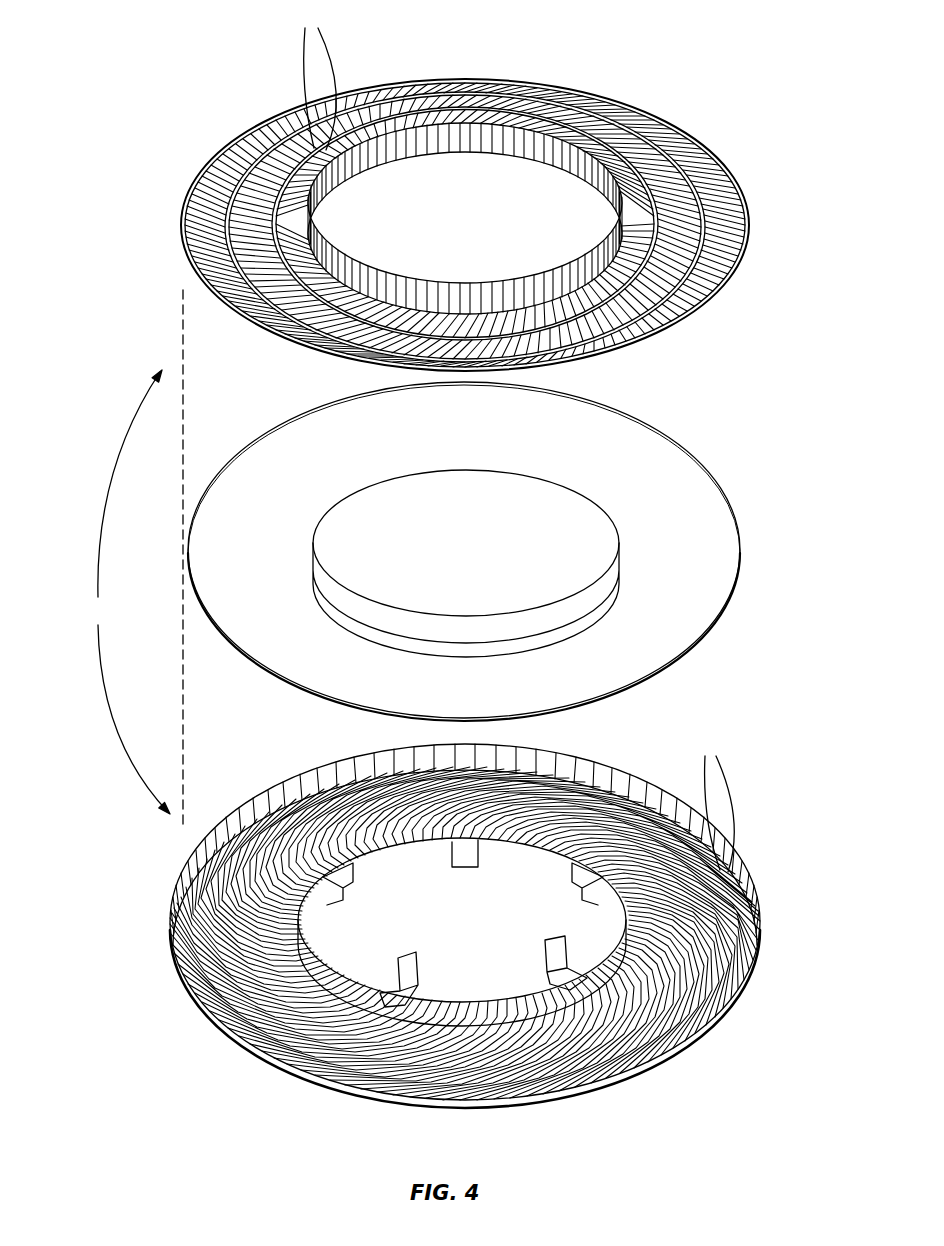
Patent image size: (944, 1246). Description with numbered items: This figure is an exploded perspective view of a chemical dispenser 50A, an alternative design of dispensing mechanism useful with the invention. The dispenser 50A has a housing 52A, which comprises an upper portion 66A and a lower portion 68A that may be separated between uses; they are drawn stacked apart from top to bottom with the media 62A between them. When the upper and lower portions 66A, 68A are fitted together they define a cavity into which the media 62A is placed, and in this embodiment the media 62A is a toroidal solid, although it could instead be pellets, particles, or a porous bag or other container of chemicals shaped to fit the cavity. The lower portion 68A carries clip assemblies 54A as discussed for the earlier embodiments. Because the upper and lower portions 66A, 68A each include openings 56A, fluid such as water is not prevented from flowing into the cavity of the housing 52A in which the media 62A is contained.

The dispenser 50A is at (94, 106).
The housing 52A is at (118, 557).
The clip assemblies 54A is at (545, 962).
The openings 56A is at (514, 438).
The media 62A is at (690, 455).
The upper portion 66A is at (708, 116).
The lower portion 68A is at (469, 935).